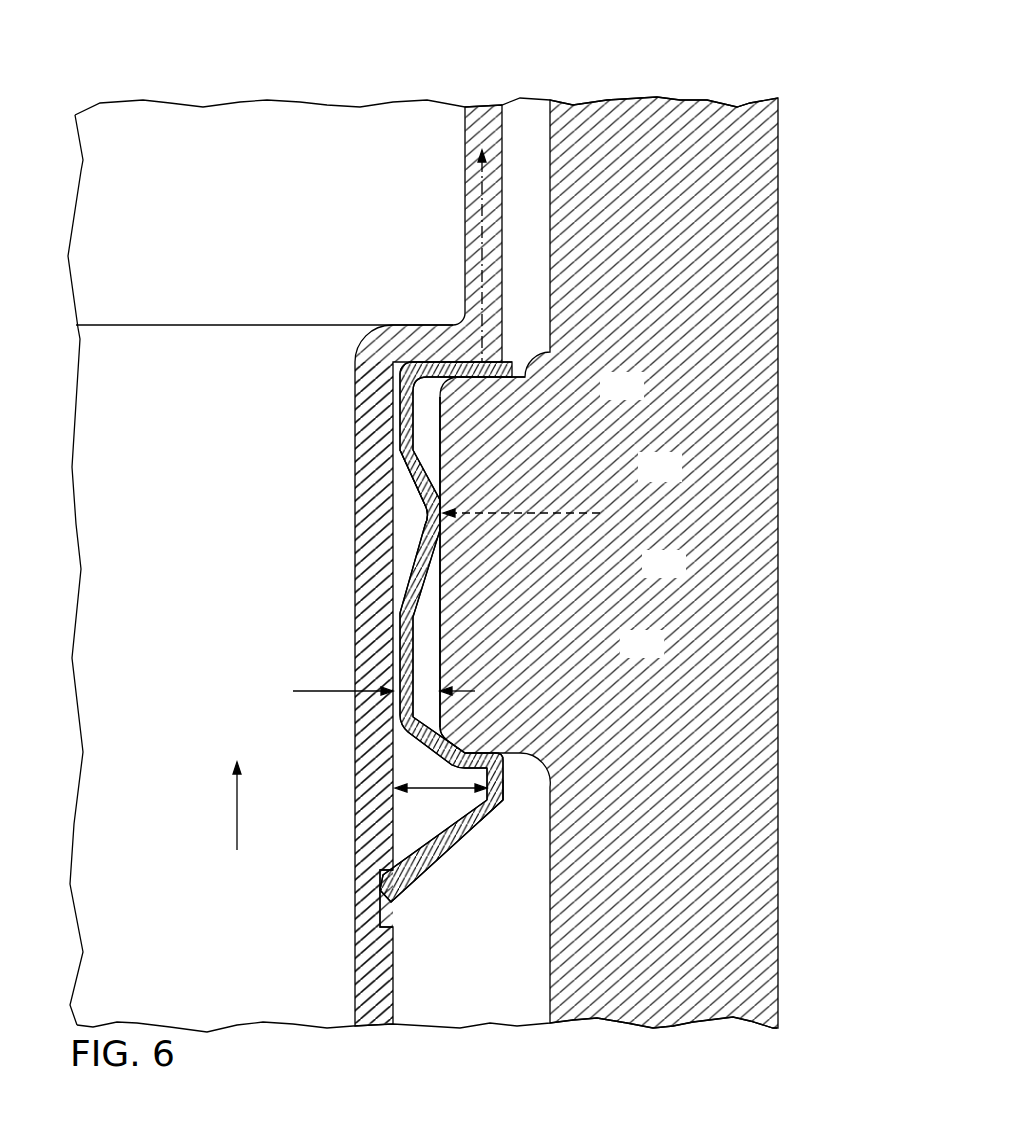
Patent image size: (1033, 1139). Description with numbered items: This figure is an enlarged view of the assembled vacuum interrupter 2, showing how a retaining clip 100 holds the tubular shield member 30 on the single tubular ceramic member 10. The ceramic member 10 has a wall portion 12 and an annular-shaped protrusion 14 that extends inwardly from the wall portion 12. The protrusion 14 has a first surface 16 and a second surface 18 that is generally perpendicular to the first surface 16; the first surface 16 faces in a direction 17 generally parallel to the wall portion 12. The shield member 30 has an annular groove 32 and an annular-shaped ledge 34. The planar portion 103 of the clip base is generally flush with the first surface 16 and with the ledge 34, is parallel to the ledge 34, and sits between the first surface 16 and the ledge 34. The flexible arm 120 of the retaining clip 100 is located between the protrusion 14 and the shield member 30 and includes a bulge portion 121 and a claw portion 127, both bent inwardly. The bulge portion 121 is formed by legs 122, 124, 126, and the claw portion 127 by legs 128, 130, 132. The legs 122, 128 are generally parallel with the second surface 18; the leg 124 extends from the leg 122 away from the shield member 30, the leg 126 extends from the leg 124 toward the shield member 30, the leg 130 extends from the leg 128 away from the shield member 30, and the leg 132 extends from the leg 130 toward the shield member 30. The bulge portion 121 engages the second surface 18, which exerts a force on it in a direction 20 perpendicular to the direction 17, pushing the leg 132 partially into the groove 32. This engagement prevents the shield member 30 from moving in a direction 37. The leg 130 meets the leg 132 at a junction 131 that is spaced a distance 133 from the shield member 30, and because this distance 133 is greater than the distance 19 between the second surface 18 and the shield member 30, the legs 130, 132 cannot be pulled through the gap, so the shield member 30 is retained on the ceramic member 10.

The vacuum interrupter 2 is at (409, 522).
The ceramic member 10 is at (640, 521).
The wall portion 12 is at (640, 562).
The protrusion 14 is at (478, 569).
The first surface 16 is at (500, 397).
The direction 17 is at (480, 208).
The second surface 18 is at (443, 646).
The distance 19 is at (400, 716).
The direction 20 is at (597, 513).
The shield member 30 is at (380, 537).
The groove 32 is at (380, 912).
The ledge 34 is at (427, 323).
The direction 37 is at (237, 820).
The retaining clip 100 is at (439, 599).
The planar portion 103 is at (452, 362).
The flexible arm 120 is at (505, 797).
The bulge portion 121 is at (404, 511).
The leg 122 is at (398, 413).
The leg 124 is at (416, 478).
The leg 126 is at (414, 560).
The claw portion 127 is at (509, 782).
The leg 128 is at (400, 676).
The leg 130 is at (430, 755).
The junction 131 is at (500, 753).
The leg 132 is at (437, 860).
The distance 133 is at (437, 789).